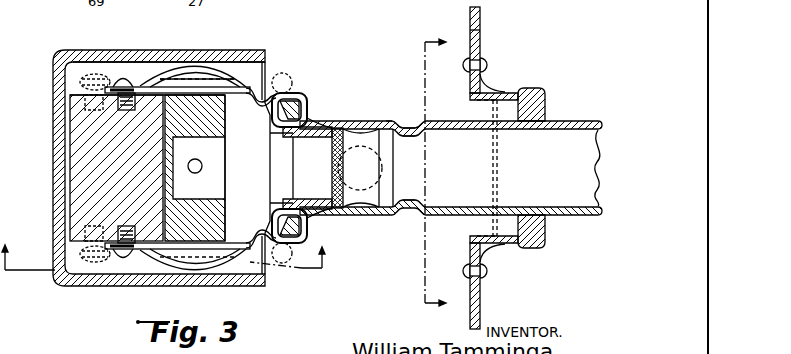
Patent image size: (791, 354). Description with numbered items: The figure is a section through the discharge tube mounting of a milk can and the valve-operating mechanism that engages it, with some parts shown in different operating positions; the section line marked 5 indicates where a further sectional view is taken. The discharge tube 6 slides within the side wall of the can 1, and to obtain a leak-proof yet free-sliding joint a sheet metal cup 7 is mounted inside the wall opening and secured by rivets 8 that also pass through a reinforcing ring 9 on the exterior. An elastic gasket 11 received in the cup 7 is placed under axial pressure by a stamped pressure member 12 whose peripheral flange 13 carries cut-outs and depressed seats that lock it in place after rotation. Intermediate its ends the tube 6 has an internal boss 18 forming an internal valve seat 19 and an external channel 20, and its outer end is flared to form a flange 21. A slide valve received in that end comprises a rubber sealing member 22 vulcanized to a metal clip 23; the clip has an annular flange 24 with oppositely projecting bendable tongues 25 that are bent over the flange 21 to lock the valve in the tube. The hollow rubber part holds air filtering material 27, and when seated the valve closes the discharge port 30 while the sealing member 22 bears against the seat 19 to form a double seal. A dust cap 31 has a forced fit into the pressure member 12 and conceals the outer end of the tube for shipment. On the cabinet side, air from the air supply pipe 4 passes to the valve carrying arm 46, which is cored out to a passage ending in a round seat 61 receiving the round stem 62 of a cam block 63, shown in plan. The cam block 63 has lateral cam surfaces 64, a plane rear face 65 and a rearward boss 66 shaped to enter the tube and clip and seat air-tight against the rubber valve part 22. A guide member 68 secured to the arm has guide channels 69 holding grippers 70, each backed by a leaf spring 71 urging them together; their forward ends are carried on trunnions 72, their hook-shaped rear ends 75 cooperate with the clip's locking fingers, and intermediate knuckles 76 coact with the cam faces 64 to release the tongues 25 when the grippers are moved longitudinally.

The can 1 is at (481, 26).
The air supply pipe 4 is at (440, 175).
The section line 5- 5 is at (163, 248).
The discharge tube 6 is at (577, 119).
The sheet metal cup 7 is at (514, 88).
The rivets 8 is at (485, 62).
The reinforcing ring 9 is at (469, 30).
The elastic gasket 11 is at (541, 89).
The stamped pressure member 12 is at (503, 205).
The peripheral flange 13 is at (500, 84).
The internal boss 18 is at (405, 140).
The internal valve seat 19 is at (392, 119).
The external channel 20 is at (410, 120).
The flange 21 is at (297, 97).
The rubber sealing member 22 is at (365, 168).
The metal clip 23 is at (309, 126).
The annular flange 24 is at (268, 121).
The bendable tongues 25 is at (305, 103).
The air filtering material 27 is at (334, 167).
The discharge port 30 is at (377, 217).
The dust cap 31 is at (492, 102).
The valve carrying arm 46 is at (170, 235).
The round seat 61 is at (217, 55).
The round stem 62 is at (198, 177).
The cam block 63 is at (259, 92).
The lateral cam surfaces 64 is at (285, 77).
The rear face 65 is at (270, 190).
The boss 66 is at (278, 161).
The guide member 68 is at (62, 291).
The guide channels 69 is at (96, 70).
The grippers 70 is at (167, 87).
The leaf spring 71 is at (181, 64).
The trunnions 72 is at (120, 111).
The hook-shaped rear ends 75 is at (308, 112).
The knuckles 76 is at (284, 94).